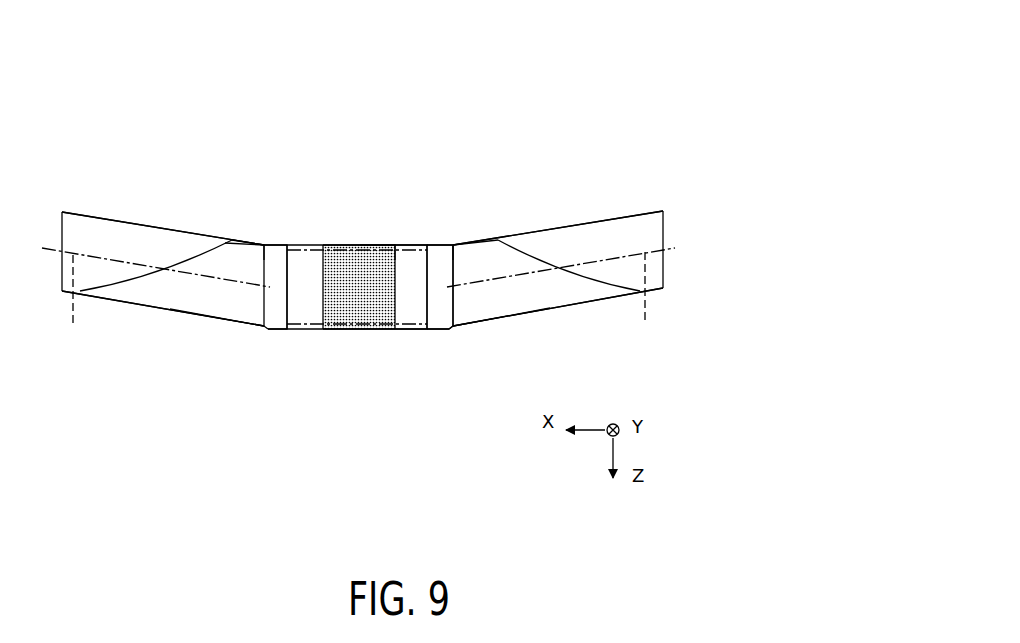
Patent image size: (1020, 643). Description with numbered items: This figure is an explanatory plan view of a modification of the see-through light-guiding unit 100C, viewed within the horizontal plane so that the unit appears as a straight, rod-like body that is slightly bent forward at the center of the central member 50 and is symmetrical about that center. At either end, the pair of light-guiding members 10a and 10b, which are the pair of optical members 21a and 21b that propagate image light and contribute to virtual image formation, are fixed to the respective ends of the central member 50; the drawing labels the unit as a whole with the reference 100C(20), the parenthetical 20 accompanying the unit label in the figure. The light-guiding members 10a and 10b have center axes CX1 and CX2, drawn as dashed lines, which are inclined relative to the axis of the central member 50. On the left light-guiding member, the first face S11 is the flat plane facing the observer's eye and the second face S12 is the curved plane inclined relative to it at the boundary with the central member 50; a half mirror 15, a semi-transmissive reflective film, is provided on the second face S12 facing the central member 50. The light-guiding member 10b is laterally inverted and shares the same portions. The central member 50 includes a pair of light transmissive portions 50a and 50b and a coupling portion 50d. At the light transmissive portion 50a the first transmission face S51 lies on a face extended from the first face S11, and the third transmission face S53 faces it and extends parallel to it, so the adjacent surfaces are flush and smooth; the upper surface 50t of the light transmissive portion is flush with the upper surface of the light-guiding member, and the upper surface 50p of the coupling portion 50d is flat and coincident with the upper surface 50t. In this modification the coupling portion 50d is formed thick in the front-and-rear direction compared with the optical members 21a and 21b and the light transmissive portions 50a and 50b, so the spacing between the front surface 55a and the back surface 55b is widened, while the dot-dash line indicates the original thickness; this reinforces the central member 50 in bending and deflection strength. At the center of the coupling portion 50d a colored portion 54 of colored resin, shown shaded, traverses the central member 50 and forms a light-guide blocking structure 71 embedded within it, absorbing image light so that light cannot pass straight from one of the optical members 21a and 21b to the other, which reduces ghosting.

The light-guiding member 10a is at (151, 227).
The optical member 21a is at (85, 197).
The light-guiding member 10b is at (586, 230).
The optical member 21b is at (627, 205).
The see-through light-guiding unit 100C is at (382, 174).
The lens body 20 is at (590, 130).
The central member 50 is at (413, 180).
The colored portion 54 is at (359, 333).
The light-guide blocking structure 71 is at (373, 318).
The first face S11 is at (123, 222).
The second face S12 is at (152, 268).
The half mirror 15 is at (137, 283).
The upper surface 50t is at (183, 252).
The first transmission face S51 is at (232, 240).
The third transmission face S53 is at (202, 318).
The light transmissive portion 50a is at (248, 265).
The light transmissive portion 50b is at (470, 265).
The coupling portion 50d is at (352, 263).
The back surface 55b is at (375, 247).
The front surface 55a is at (340, 330).
The upper surface 50p is at (403, 268).
The center axis CX1 is at (75, 303).
The center axis CX2 is at (646, 301).